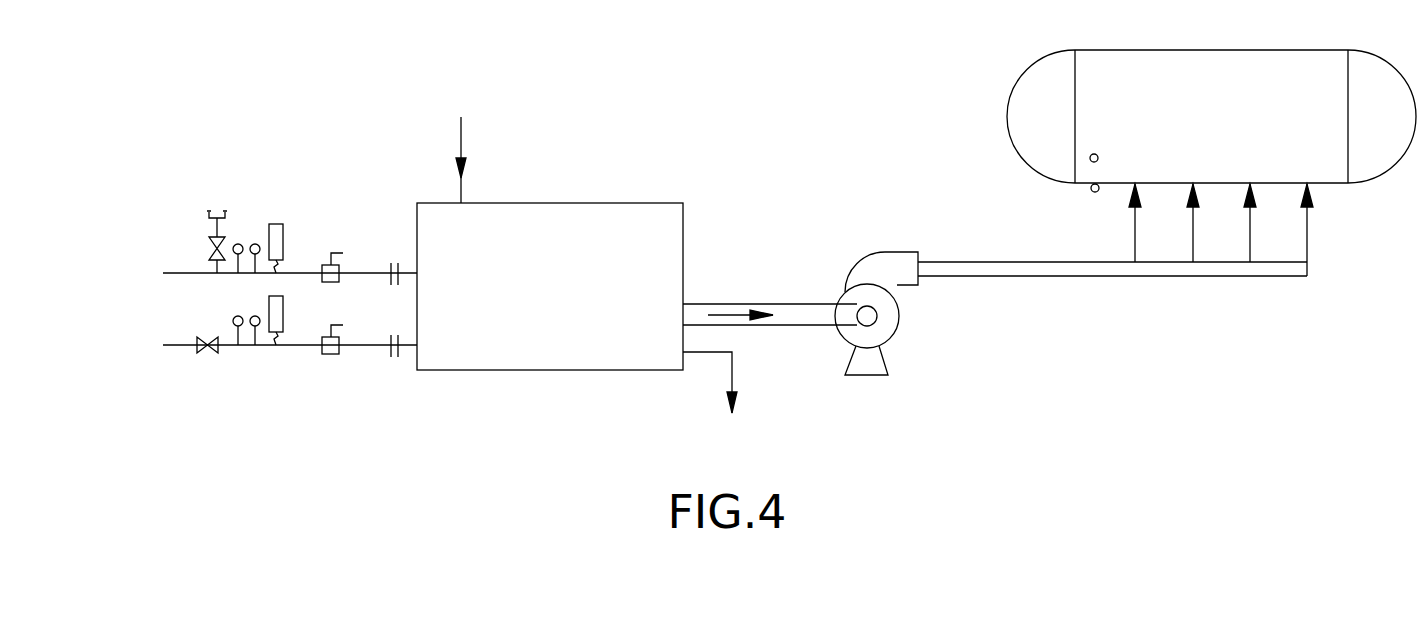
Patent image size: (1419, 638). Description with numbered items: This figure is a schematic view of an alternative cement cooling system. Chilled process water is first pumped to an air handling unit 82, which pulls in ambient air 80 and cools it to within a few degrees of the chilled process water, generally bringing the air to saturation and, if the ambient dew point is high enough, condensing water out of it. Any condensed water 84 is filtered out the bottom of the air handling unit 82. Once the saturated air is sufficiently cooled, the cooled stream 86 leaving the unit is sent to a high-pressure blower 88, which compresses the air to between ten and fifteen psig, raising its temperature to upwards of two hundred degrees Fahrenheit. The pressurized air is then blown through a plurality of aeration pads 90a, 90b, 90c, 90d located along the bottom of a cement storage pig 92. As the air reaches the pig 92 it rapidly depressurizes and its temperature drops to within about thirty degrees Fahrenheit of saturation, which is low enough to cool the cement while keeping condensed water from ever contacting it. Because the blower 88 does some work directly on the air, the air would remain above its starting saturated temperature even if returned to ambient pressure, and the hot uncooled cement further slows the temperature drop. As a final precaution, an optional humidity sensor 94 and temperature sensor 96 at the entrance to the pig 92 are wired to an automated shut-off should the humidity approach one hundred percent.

The ambient air 80 is at (461, 140).
The air handling unit 82 is at (477, 362).
The condensed water 84 is at (714, 401).
The cooled water 86 is at (743, 304).
The high-pressure blower 88 is at (872, 366).
The aeration pad 90a is at (1136, 250).
The aeration pad 90b is at (1194, 250).
The aeration pad 90c is at (1251, 250).
The aeration pad 90d is at (1308, 252).
The cement storage pig 92 is at (1205, 63).
The humidity sensor 94 is at (1093, 192).
The temperature sensor 96 is at (1098, 157).